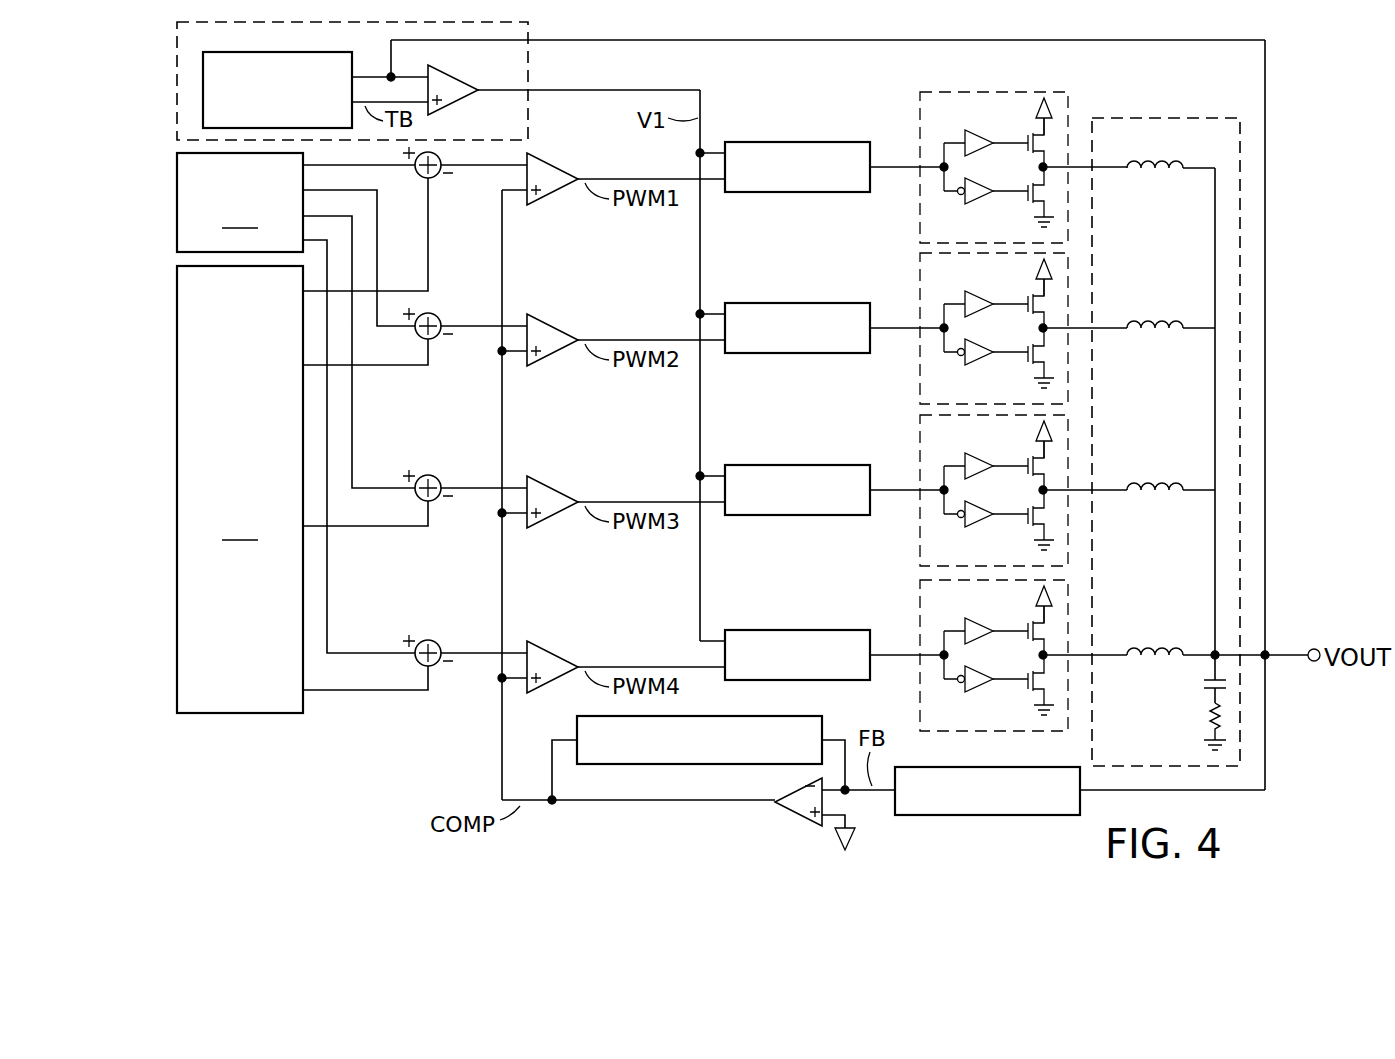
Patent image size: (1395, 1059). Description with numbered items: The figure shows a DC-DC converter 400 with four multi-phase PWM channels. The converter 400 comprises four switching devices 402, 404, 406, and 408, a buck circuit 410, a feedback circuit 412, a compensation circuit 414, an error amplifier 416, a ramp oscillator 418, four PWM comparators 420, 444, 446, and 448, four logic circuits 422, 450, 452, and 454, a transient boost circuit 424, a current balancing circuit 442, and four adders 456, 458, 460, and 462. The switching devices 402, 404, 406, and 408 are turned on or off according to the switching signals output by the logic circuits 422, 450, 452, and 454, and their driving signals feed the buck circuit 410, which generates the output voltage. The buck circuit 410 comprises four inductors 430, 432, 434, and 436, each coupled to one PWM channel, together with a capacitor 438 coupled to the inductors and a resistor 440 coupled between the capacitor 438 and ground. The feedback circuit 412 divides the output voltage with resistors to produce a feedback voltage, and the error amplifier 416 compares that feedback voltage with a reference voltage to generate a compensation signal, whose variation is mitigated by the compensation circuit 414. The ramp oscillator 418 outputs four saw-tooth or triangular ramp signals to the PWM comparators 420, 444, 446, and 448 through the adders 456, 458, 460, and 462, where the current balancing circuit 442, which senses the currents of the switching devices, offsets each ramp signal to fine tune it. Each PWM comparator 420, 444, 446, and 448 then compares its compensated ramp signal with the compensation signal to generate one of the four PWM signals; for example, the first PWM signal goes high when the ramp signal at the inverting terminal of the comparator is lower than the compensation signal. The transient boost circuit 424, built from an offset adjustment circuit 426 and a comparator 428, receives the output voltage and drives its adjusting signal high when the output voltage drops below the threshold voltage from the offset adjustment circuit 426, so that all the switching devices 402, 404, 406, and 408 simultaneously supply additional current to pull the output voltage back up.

The converter 400 is at (260, 802).
The switching device 402 is at (1017, 240).
The switching device 404 is at (1017, 401).
The switching device 406 is at (1017, 563).
The switching device 408 is at (1017, 728).
The buck circuit 410 is at (1112, 120).
The feedback circuit 412 is at (983, 766).
The compensation circuit 414 is at (700, 716).
The error amplifier 416 is at (792, 824).
The ramp oscillator 418 is at (296, 403).
The PWM comparator 420 is at (556, 170).
The logic circuit 422 is at (752, 144).
The transient boost circuit 424 is at (530, 62).
The offset adjustment circuit 426 is at (255, 55).
The comparator 428 is at (447, 74).
The inductor 430 is at (1140, 163).
The inductor 432 is at (1140, 323).
The inductor 434 is at (1140, 485).
The inductor 436 is at (1140, 650).
The capacitor 438 is at (1200, 685).
The resistor 440 is at (1205, 722).
The current balancing circuit 442 is at (302, 445).
The PWM comparator 444 is at (556, 331).
The PWM comparator 446 is at (556, 493).
The PWM comparator 448 is at (556, 658).
The logic circuit 450 is at (752, 305).
The logic circuit 452 is at (752, 467).
The logic circuit 454 is at (752, 631).
The adder 456 is at (420, 182).
The adder 458 is at (438, 318).
The adder 460 is at (438, 480).
The adder 462 is at (438, 645).